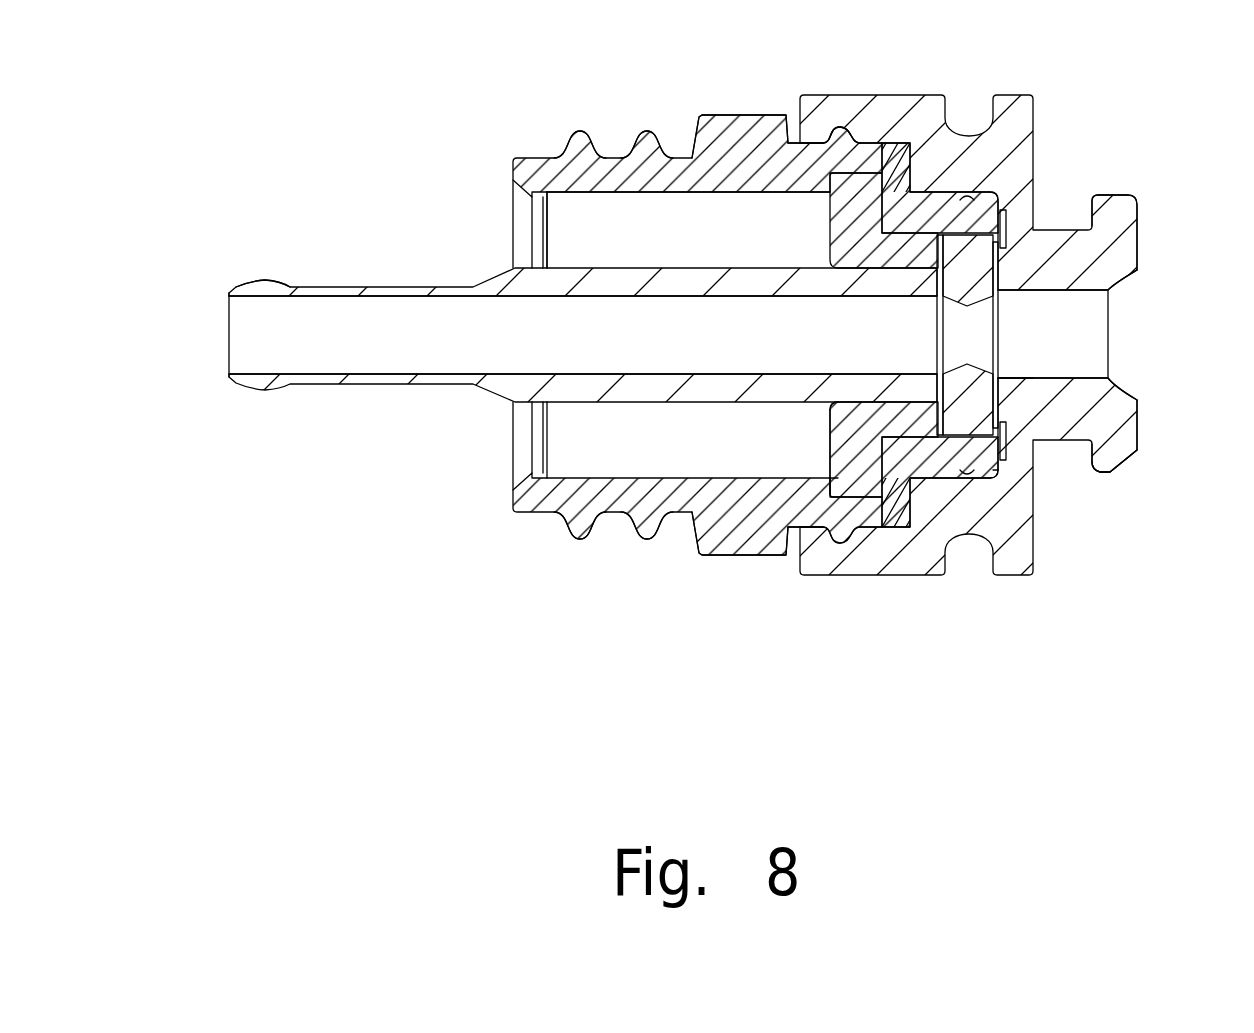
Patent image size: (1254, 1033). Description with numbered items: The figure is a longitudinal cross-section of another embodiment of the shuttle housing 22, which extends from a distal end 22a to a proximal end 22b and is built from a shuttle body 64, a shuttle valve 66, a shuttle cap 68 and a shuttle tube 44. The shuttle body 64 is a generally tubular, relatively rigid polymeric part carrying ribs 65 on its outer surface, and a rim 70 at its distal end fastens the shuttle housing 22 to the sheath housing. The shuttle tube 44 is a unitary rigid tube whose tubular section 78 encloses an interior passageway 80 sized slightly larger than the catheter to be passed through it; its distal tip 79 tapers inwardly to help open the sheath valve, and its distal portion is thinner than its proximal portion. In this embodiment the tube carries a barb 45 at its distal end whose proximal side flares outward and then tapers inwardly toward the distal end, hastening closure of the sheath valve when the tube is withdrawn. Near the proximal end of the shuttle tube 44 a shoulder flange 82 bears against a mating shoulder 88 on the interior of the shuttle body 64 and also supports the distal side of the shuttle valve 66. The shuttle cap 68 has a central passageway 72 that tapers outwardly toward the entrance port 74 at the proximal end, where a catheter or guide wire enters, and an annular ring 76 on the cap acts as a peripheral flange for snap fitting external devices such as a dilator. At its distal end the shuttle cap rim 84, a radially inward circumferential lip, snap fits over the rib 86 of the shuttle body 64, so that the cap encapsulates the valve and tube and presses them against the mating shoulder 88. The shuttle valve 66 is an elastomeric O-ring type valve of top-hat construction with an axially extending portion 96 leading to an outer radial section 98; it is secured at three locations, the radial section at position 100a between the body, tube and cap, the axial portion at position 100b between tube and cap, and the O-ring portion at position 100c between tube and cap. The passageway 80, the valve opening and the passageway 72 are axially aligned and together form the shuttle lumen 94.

The shuttle housing 22 is at (703, 393).
The distal end 22a is at (680, 318).
The proximal end 22b is at (1026, 338).
The shuttle tube 44 is at (375, 282).
The barb 45 is at (270, 279).
The shuttle body 64 is at (698, 115).
The ribs 65 is at (581, 538).
The shuttle valve 66 is at (989, 470).
The shuttle cap 68 is at (1030, 568).
The rim 70 is at (547, 458).
The central passageway 72 is at (1048, 313).
The entrance port 74 is at (1140, 360).
The annular ring 76 is at (1120, 470).
The tubular section 78 is at (645, 262).
The distal tip 79 is at (228, 379).
The interior passageway 80 is at (576, 322).
The shoulder flange 82 is at (843, 430).
The shuttle cap rim 84 is at (790, 148).
The rib 86 is at (840, 126).
The mating shoulder 88 is at (822, 491).
The shuttle lumen 94 is at (735, 333).
The axially extending portion 96 is at (978, 212).
The outer radial section 98 is at (897, 148).
The position 100a is at (893, 168).
The position 100b is at (932, 457).
The position 100c is at (1010, 404).